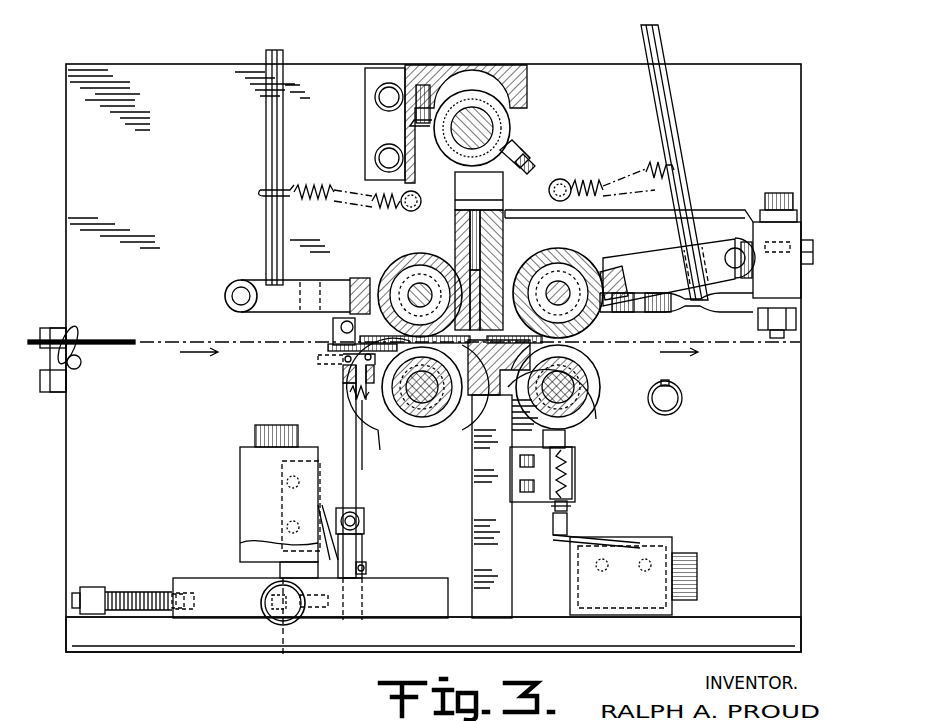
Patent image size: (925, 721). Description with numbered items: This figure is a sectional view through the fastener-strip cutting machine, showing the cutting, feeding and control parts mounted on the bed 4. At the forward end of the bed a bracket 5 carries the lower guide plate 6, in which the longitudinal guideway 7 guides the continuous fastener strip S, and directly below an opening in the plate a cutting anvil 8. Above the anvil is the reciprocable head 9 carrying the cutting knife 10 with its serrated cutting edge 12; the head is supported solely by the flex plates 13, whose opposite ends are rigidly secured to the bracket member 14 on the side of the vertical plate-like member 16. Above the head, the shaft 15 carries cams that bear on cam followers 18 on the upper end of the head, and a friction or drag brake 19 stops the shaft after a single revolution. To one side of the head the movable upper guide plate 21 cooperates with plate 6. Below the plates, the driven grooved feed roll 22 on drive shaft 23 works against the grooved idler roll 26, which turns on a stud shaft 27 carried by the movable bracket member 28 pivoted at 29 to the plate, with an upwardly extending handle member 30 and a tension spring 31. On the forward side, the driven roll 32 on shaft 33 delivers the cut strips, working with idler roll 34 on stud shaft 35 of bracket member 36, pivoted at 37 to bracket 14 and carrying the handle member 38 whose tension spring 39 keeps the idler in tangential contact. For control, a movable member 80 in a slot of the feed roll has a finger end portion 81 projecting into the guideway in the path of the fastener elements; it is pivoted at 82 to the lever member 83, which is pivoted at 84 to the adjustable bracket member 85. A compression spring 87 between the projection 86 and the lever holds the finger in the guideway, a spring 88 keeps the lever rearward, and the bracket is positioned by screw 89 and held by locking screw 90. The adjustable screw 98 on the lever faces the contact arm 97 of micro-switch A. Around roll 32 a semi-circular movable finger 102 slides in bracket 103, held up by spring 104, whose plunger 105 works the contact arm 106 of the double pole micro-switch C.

The bed 4 is at (80, 320).
The bracket 5 is at (472, 526).
The lower guide plate 6 is at (318, 360).
The guideway 7 is at (333, 333).
The cutting anvil 8 is at (480, 395).
The head 9 is at (498, 220).
The cutting knife 10 is at (462, 262).
The serrated cutting edge 12 is at (500, 292).
The flex plates 13 is at (712, 210).
The bracket member 14 is at (790, 230).
The shaft 15 is at (508, 122).
The plate-like member 16 is at (737, 70).
The cam followers 18 is at (455, 176).
The friction or drag brake 19 is at (522, 142).
The movable upper guide plate 21 is at (352, 290).
The feed roll 22 is at (420, 428).
The drive shaft 23 is at (422, 420).
The idler roll 26 is at (400, 260).
The stud shaft 27 is at (412, 292).
The movable bracket member 28 is at (306, 282).
The pivot 29 is at (228, 296).
The handle member 30 is at (268, 137).
The tension spring 31 is at (318, 182).
The driven roll 32 is at (596, 410).
The shaft 33 is at (598, 372).
The idler roll 34 is at (582, 262).
The stud shaft 35 is at (558, 285).
The movable bracket member 36 is at (650, 300).
The pivot 37 is at (740, 220).
The handle member 38 is at (668, 117).
The tension spring 39 is at (588, 180).
The movable member 80 is at (396, 400).
The finger end portion 81 is at (448, 400).
The pivot 82 is at (345, 352).
The lever member 83 is at (343, 422).
The pivot 84 is at (364, 522).
The adjustable bracket member 85 is at (222, 605).
The projection 86 is at (364, 425).
The compression spring 87 is at (350, 390).
The spring 88 is at (297, 618).
The screw 89 is at (132, 612).
The locking screw 90 is at (268, 610).
The contact arm 97 is at (280, 545).
The adjustable screw 98 is at (366, 568).
The movable finger 102 is at (592, 366).
The bracket 103 is at (545, 490).
The spring 104 is at (574, 470).
The plunger 105 is at (568, 510).
The contact arm 106 is at (580, 530).
The micro-switch A is at (245, 498).
The continuous fastener strip S is at (119, 358).
The double pole micro-switch C is at (636, 560).